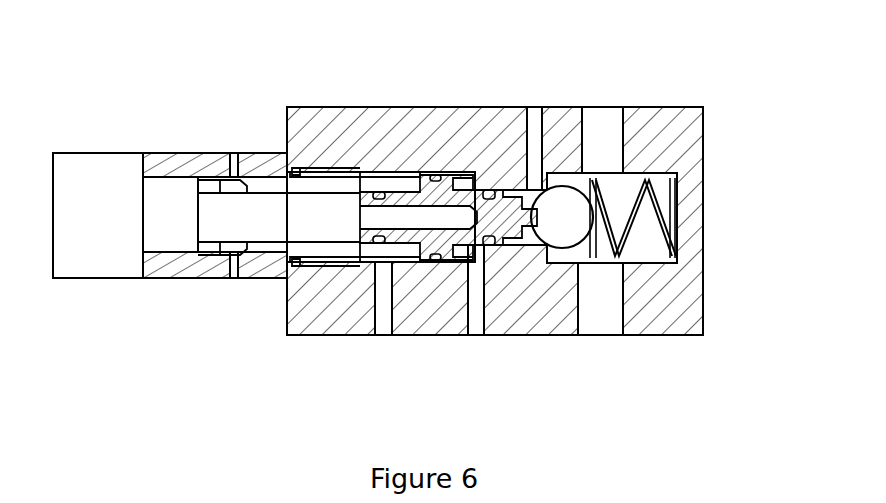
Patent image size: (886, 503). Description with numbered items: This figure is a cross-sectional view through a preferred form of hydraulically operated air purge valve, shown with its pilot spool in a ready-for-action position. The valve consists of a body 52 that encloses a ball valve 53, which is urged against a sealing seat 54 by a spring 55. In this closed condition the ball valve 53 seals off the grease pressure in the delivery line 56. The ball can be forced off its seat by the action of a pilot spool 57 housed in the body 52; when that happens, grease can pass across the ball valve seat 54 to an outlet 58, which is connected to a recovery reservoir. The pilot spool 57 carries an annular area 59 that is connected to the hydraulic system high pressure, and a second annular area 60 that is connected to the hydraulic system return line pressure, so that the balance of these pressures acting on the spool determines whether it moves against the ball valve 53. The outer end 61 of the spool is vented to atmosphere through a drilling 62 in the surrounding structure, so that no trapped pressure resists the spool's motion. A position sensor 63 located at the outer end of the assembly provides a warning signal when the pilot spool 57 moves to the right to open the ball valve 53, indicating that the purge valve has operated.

The body 52 is at (680, 335).
The ball valve 53 is at (583, 175).
The sealing seat 54 is at (543, 242).
The spring 55 is at (672, 237).
The delivery line 56 is at (600, 335).
The pilot spool 57 is at (444, 168).
The outlet 58 is at (530, 190).
The annular area 59 is at (410, 170).
The second annular area 60 is at (479, 170).
The outer end 61 is at (359, 168).
The drilling 62 is at (230, 152).
The position sensor 63 is at (105, 262).